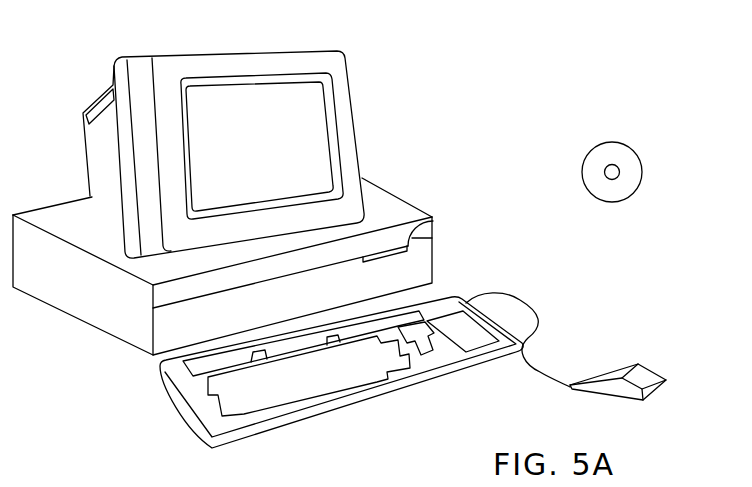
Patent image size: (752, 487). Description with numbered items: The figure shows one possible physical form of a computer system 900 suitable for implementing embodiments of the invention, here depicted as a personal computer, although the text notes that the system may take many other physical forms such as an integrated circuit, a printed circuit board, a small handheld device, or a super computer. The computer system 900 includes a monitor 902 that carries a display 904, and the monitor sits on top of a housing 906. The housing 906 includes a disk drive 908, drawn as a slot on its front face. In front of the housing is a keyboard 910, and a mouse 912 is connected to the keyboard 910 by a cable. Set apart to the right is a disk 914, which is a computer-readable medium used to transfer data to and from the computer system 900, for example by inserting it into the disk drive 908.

The computer system 900 is at (541, 30).
The monitor 902 is at (358, 152).
The display 904 is at (320, 110).
The housing 906 is at (113, 338).
The disk drive 908 is at (434, 216).
The keyboard 910 is at (350, 406).
The mouse 912 is at (657, 370).
The disk 914 is at (628, 143).